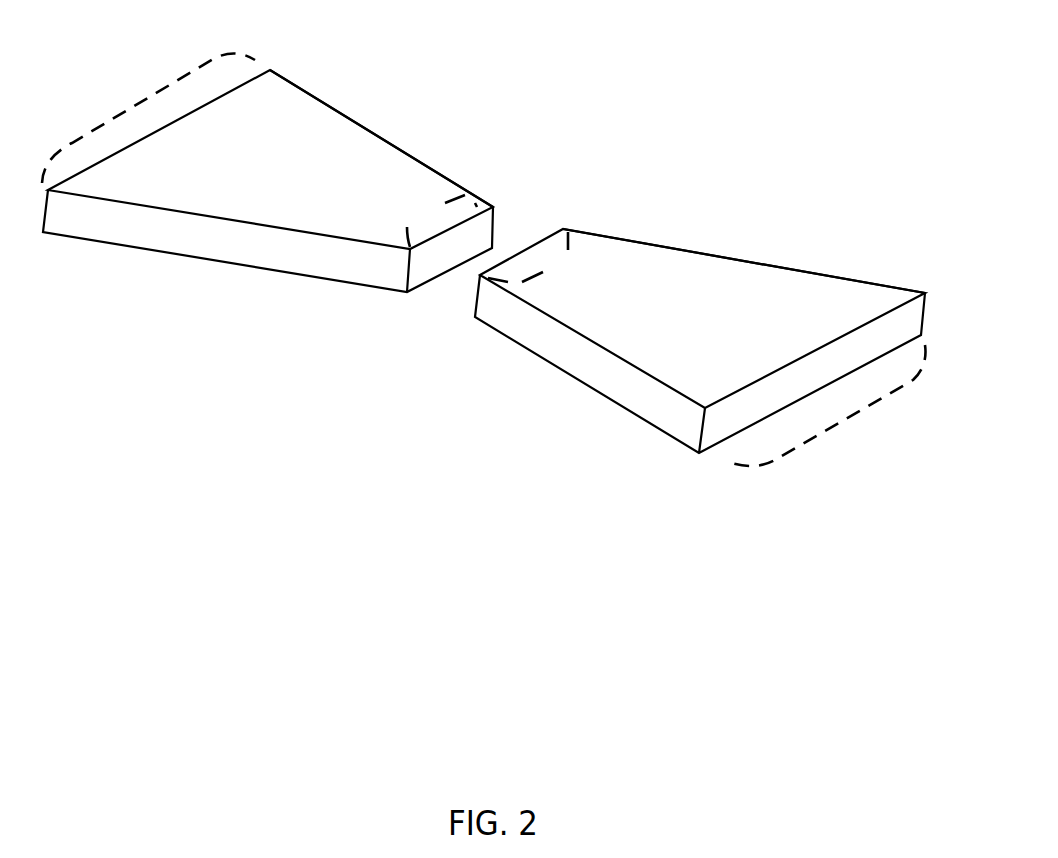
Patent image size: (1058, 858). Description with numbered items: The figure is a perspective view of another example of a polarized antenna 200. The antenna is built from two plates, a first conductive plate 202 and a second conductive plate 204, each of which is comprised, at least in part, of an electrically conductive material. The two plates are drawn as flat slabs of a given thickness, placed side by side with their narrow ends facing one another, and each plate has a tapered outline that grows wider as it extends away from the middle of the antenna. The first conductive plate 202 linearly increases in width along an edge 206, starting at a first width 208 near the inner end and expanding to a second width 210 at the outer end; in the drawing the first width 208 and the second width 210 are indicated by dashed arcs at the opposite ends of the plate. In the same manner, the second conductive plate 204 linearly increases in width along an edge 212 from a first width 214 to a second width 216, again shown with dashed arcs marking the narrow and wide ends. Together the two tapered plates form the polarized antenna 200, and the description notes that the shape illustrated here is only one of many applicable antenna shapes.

The polarized antenna 200 is at (805, 159).
The first conductive plate 202 is at (683, 340).
The second conductive plate 204 is at (222, 175).
The edge 206 is at (770, 262).
The first width 208 is at (550, 267).
The second width 210 is at (840, 425).
The edge 212 is at (383, 140).
The first width 214 is at (417, 220).
The second width 216 is at (137, 100).